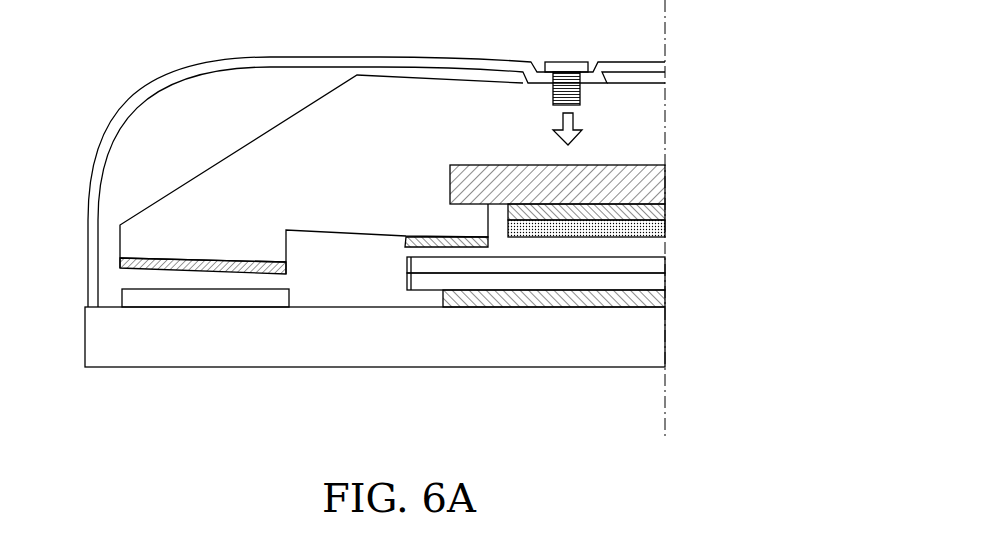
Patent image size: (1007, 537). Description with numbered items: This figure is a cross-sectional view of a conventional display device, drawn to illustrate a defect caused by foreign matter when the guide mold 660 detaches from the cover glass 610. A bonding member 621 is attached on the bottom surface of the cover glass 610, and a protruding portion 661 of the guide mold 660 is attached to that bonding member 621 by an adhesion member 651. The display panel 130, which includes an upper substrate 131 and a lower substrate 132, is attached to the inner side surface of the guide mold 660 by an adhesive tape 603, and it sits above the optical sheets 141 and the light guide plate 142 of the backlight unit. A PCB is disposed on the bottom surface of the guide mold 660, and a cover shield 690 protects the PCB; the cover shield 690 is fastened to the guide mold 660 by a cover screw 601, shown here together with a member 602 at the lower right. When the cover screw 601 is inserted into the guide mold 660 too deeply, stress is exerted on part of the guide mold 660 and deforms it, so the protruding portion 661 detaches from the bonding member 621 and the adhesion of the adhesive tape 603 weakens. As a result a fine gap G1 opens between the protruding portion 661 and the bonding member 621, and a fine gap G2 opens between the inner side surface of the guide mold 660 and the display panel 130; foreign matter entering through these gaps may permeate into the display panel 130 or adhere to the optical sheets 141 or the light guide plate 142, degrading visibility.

The cover shield 690 is at (112, 120).
The cover screw 601 is at (562, 78).
The guide mold 660 is at (638, 124).
The protruding portion 661 is at (140, 238).
The adhesion member 651 is at (140, 265).
The bonding member 621 is at (130, 299).
The cover glass 610 is at (112, 343).
The adhesive tape 603 is at (470, 248).
The light guide plate 142 is at (640, 180).
The optical sheets 141 is at (640, 213).
The display panel 130 is at (588, 266).
The lower substrate 132 is at (640, 265).
The upper substrate 131 is at (640, 278).
The support member 602 is at (640, 297).
The fine gap G1 is at (185, 281).
The fine gap G2 is at (434, 250).